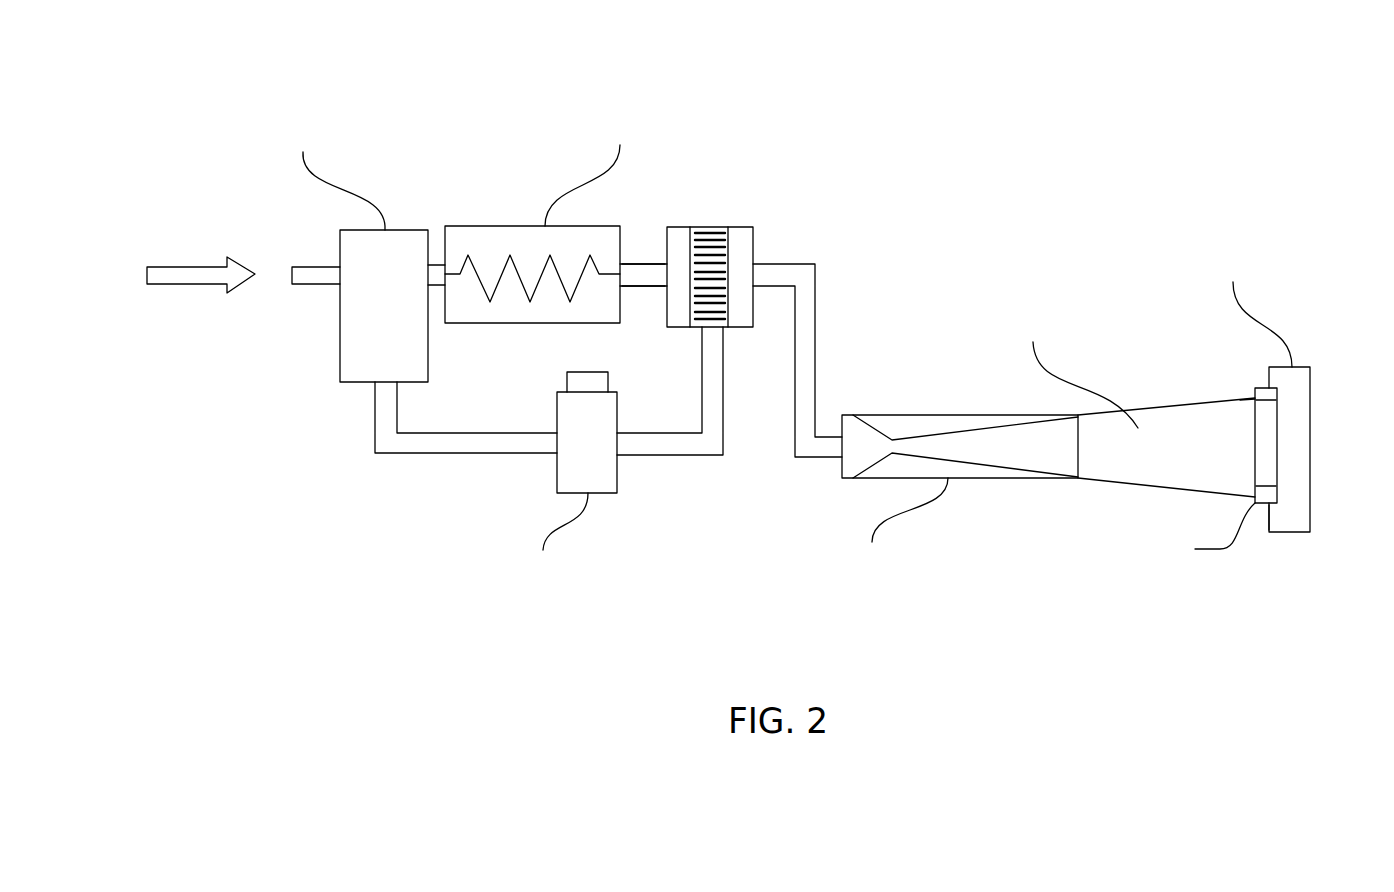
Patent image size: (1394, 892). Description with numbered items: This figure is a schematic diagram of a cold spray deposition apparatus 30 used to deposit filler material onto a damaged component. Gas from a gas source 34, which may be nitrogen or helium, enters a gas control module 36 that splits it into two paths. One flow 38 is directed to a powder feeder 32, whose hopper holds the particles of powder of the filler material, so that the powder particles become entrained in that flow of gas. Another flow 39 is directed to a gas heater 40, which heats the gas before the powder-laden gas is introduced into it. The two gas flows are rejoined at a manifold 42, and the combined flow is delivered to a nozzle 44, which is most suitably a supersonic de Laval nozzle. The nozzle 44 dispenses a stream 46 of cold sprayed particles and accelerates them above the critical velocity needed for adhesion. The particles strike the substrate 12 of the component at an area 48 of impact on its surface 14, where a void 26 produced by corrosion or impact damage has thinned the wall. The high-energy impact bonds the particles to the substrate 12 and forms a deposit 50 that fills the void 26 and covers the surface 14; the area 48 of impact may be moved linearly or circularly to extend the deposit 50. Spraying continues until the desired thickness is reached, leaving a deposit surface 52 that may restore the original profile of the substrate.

The cold spray deposition apparatus 30 is at (1044, 71).
The gas source 34 is at (190, 284).
The gas control module 36 is at (338, 347).
The gas heater 40 is at (493, 226).
The another flow of gas 39 is at (637, 262).
The manifold 42 is at (738, 228).
The powder feeder 32 is at (617, 475).
The one flow of gas 38 is at (705, 457).
The nozzle 44 is at (925, 415).
The stream of cold sprayed particles 46 is at (1183, 405).
The deposit surface 52 is at (1253, 410).
The area of impact 48 is at (1277, 450).
The deposit 50 is at (1263, 425).
The void 26 is at (1277, 485).
The substrate 12 is at (1297, 367).
The surface 14 is at (1273, 520).